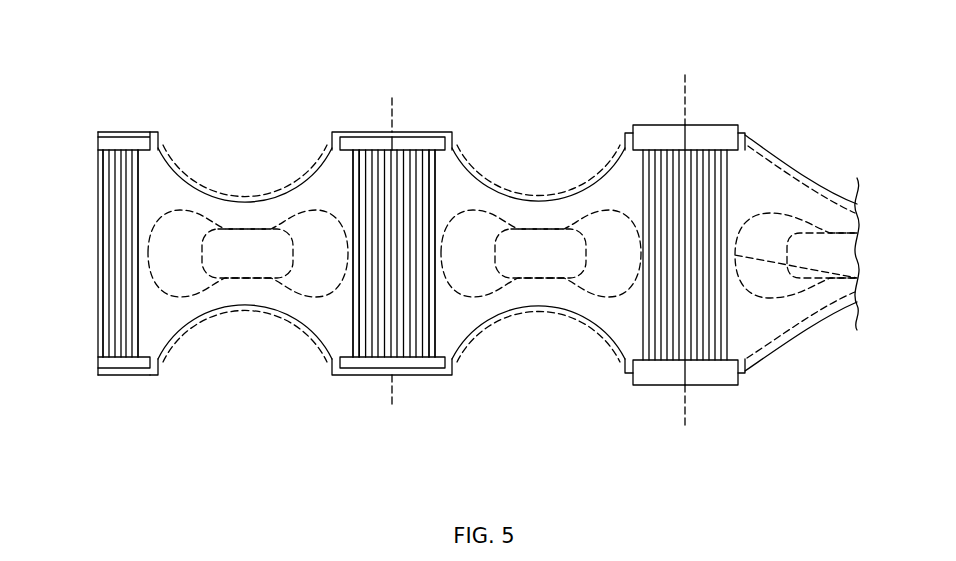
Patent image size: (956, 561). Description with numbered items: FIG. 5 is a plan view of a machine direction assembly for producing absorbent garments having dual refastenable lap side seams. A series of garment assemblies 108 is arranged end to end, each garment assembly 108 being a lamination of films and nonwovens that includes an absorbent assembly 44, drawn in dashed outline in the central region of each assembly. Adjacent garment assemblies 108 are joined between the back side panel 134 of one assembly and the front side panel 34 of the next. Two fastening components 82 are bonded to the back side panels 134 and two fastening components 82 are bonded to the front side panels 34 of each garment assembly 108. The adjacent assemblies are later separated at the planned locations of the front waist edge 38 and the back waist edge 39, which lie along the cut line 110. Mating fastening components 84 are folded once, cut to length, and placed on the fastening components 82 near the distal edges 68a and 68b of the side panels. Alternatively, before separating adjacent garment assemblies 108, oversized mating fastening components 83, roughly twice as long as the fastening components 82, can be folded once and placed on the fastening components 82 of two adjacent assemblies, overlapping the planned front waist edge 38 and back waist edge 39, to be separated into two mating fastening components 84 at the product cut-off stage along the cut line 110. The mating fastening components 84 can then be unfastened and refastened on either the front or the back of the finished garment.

The front side panel 34 is at (333, 130).
The front waist edge 38 is at (386, 233).
The back waist edge 39 is at (102, 182).
The absorbent assembly 44 is at (543, 262).
The distal edge of front side panel 68a is at (350, 130).
The distal edge of back side panel 68b is at (120, 130).
The fastening component 82 is at (147, 137).
The oversized mating fastening component 83 is at (372, 140).
The mating fastening component 84 is at (663, 140).
The garment assembly 108 is at (236, 175).
The cut line 110 is at (393, 407).
The back side panel 134 is at (88, 143).